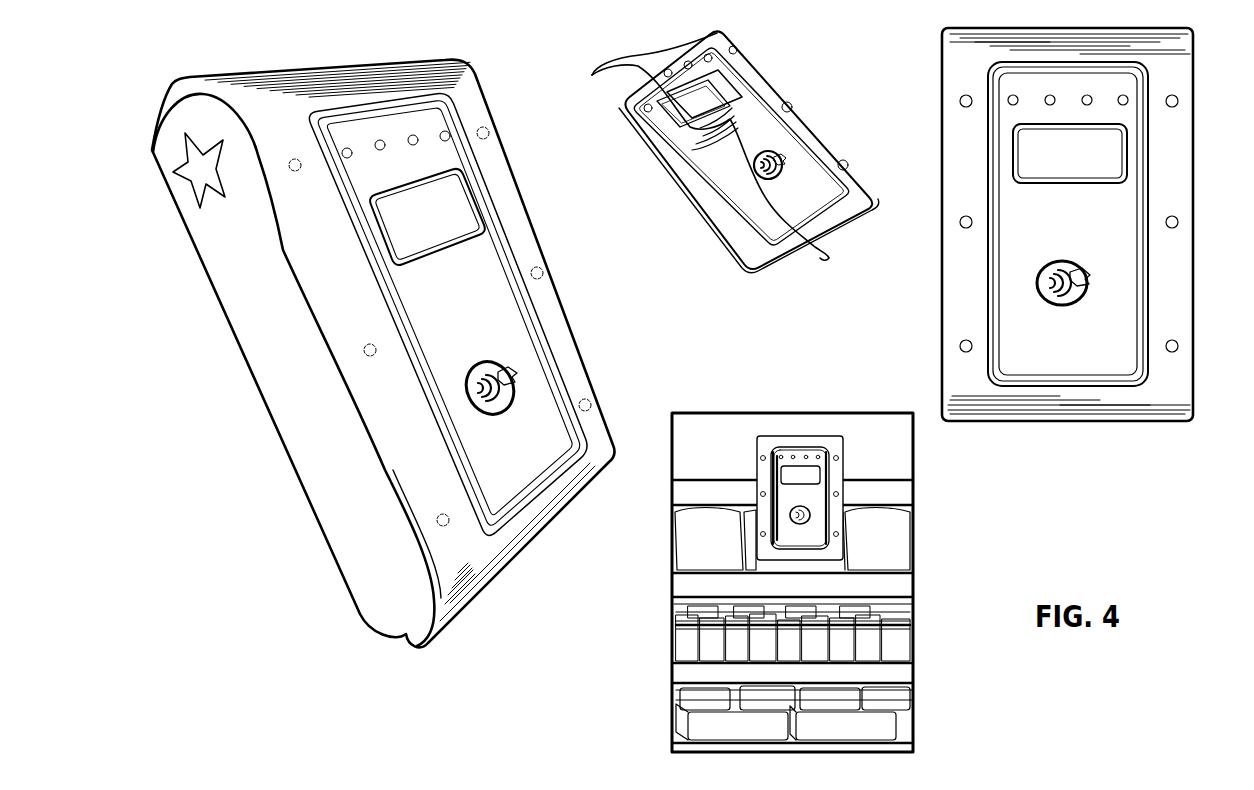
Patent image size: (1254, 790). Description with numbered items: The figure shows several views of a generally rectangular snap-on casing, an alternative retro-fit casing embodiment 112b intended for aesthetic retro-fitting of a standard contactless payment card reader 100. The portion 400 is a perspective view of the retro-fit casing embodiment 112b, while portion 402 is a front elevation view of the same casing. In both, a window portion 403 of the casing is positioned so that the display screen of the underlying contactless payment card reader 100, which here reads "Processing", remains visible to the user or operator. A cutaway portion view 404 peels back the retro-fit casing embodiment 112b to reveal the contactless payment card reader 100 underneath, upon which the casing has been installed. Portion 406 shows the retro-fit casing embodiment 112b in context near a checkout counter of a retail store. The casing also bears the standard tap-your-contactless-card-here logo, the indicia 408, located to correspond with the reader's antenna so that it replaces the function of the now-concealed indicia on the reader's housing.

The contactless payment card reader 100 is at (691, 212).
The retro-fit casing embodiment 112b is at (327, 512).
The perspective view portion 400 is at (330, 630).
The front elevation view portion 402 is at (931, 64).
The window portion 403 is at (480, 246).
The cutaway portion view 404 is at (812, 270).
The in-context view portion 406 is at (919, 507).
The contactless tap indicia 408 is at (513, 355).